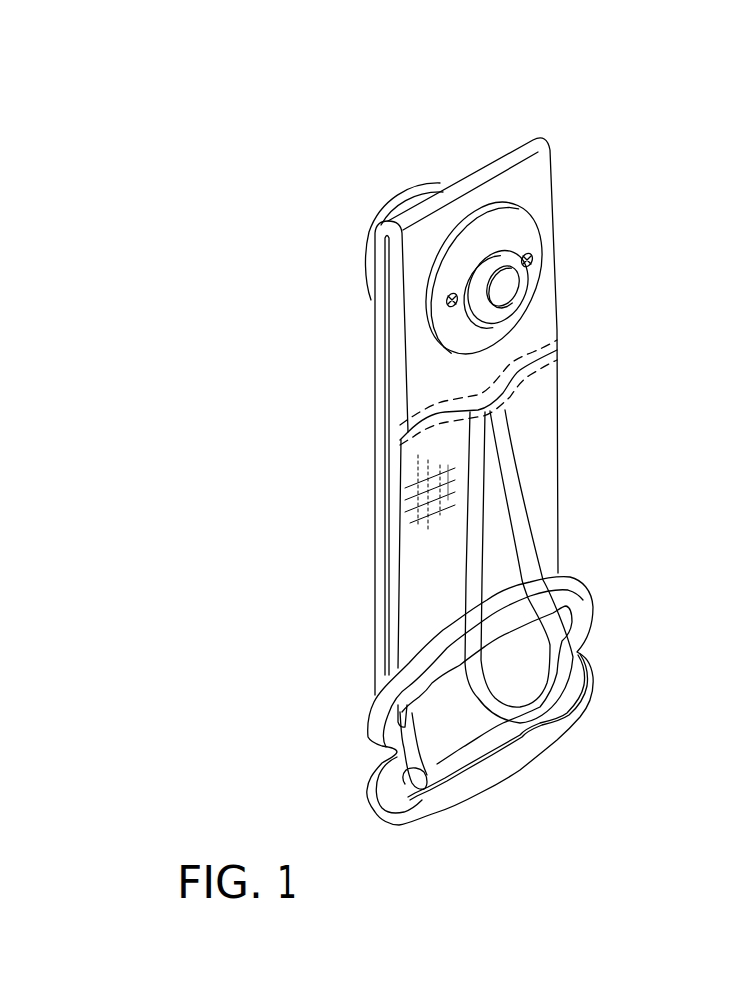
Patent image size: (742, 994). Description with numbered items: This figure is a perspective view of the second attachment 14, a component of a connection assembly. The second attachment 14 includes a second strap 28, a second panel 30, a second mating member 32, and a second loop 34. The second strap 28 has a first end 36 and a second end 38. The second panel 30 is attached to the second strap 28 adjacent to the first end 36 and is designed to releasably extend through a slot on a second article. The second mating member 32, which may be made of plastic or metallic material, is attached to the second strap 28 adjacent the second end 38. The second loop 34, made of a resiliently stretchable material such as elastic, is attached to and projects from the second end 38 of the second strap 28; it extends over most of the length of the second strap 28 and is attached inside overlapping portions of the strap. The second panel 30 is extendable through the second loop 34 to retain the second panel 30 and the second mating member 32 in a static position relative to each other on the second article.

The second attachment 14 is at (243, 197).
The second strap 28 is at (533, 430).
The second panel 30 is at (583, 610).
The second mating member 32 is at (518, 230).
The second loop 34 is at (518, 537).
The first end 36 is at (353, 652).
The second end 38 is at (350, 330).